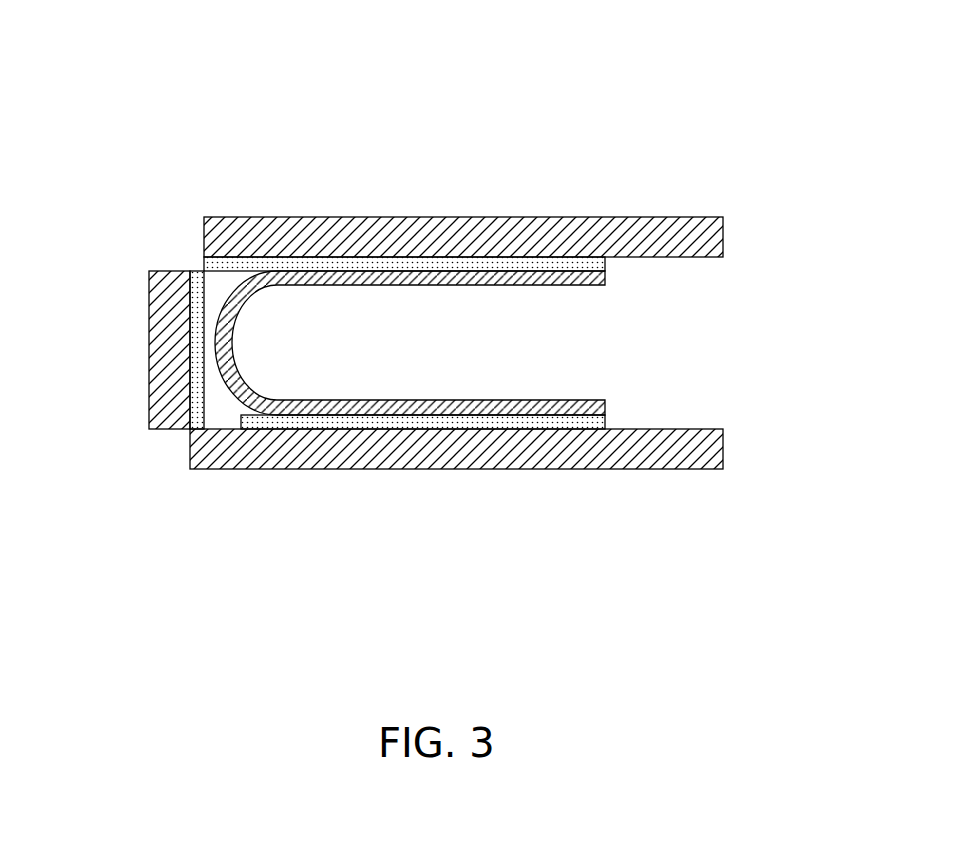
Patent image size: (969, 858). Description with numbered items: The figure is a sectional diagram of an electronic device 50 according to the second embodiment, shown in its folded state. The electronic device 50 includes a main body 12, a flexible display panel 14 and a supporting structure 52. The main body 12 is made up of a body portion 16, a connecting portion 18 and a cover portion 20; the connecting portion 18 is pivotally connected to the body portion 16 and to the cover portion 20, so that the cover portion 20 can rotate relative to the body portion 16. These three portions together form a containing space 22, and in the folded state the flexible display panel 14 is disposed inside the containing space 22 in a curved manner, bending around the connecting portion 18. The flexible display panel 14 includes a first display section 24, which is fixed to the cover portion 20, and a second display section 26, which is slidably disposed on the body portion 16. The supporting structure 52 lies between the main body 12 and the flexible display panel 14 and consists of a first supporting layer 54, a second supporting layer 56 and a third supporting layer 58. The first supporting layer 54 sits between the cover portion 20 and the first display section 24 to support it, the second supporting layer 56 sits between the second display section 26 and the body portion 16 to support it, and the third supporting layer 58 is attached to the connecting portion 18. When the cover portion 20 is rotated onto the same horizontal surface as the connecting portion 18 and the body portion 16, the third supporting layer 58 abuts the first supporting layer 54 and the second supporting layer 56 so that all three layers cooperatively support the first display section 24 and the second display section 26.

The electronic device 50 is at (722, 92).
The main body 12 is at (98, 212).
The cover portion 20 is at (206, 233).
The connecting portion 18 is at (163, 343).
The body portion 16 is at (196, 452).
The supporting structure 52 is at (397, 171).
The third supporting layer 58 is at (200, 287).
The second supporting layer 56 is at (315, 412).
The first supporting layer 54 is at (369, 268).
The flexible display panel 14 is at (575, 171).
The first display section 24 is at (555, 280).
The second display section 26 is at (493, 410).
The containing space 22 is at (697, 328).